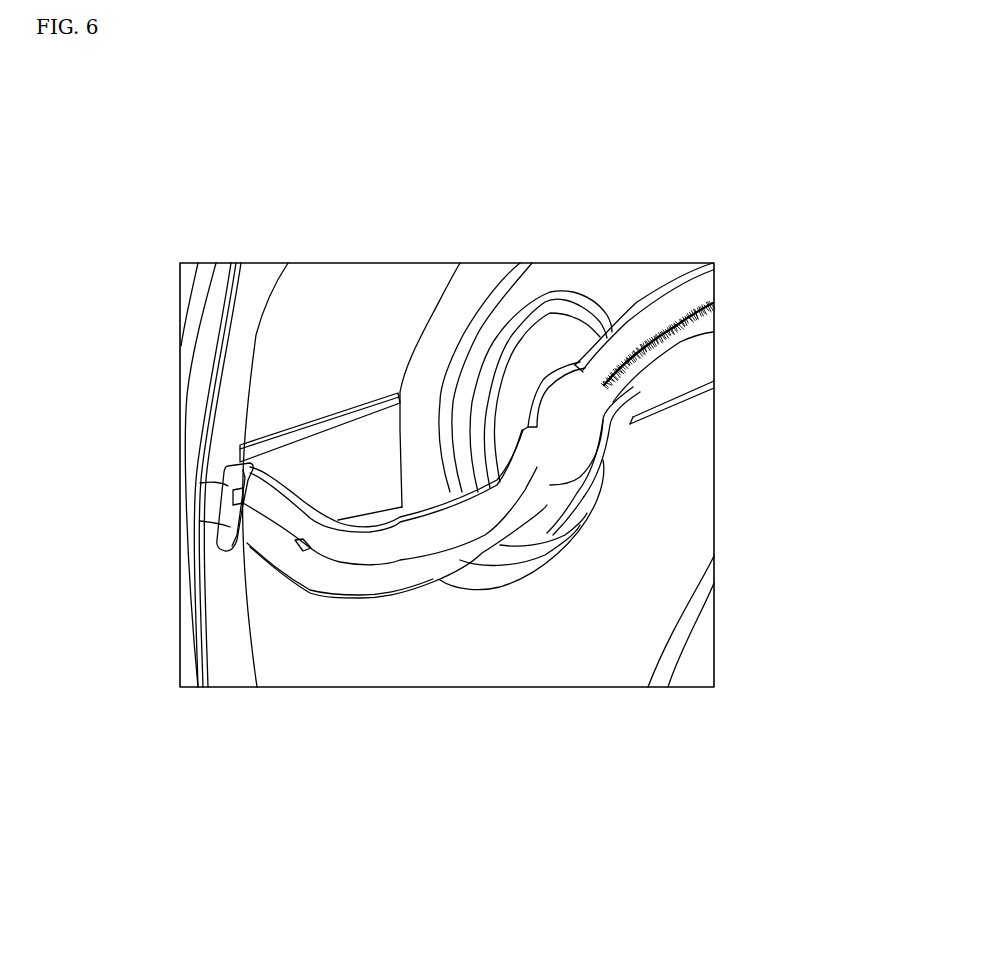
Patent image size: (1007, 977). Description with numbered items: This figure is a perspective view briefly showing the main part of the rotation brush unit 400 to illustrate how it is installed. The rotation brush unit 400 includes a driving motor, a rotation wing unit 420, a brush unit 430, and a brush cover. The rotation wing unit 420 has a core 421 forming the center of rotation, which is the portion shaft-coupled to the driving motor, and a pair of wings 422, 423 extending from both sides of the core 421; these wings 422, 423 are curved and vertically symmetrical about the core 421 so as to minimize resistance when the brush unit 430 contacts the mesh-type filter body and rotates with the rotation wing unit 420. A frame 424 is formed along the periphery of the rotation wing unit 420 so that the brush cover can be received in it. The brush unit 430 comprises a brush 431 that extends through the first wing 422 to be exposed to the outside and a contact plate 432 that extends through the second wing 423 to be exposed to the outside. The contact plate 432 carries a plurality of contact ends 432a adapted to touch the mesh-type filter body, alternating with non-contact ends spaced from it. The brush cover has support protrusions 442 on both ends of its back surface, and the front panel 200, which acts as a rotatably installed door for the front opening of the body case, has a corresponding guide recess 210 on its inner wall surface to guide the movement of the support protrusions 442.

The front panel 200 is at (629, 665).
The guide recess 210 is at (206, 420).
The rotation brush unit 400 is at (497, 545).
The rotation wing unit 420 is at (808, 388).
The core 421 is at (572, 443).
The first wing 422 is at (650, 360).
The second wing 423 is at (528, 498).
The frame 424 is at (637, 300).
The brush unit 430 is at (483, 163).
The brush 431 is at (630, 370).
The contact plate 432 is at (362, 560).
The contact ends 432a is at (308, 552).
The support protrusions 442 is at (207, 507).